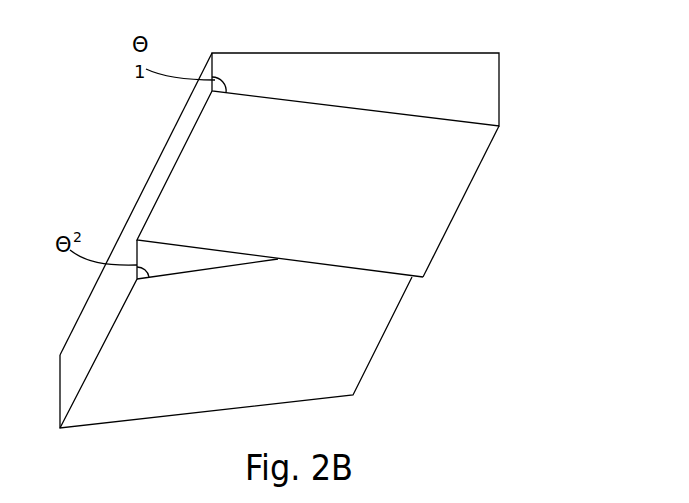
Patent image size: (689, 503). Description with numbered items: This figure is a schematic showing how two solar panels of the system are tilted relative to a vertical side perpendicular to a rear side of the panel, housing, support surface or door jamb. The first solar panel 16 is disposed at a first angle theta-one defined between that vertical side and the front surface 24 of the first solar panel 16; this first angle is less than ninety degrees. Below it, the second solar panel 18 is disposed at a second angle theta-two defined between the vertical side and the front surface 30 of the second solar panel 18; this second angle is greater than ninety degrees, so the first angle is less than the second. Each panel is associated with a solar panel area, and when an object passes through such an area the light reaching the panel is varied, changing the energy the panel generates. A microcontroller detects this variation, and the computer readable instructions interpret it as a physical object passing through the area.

The first solar panel 16 is at (463, 197).
The second solar panel 18 is at (363, 377).
The front surface of the first solar panel 24 is at (353, 172).
The front surface of the second solar panel 30 is at (282, 354).